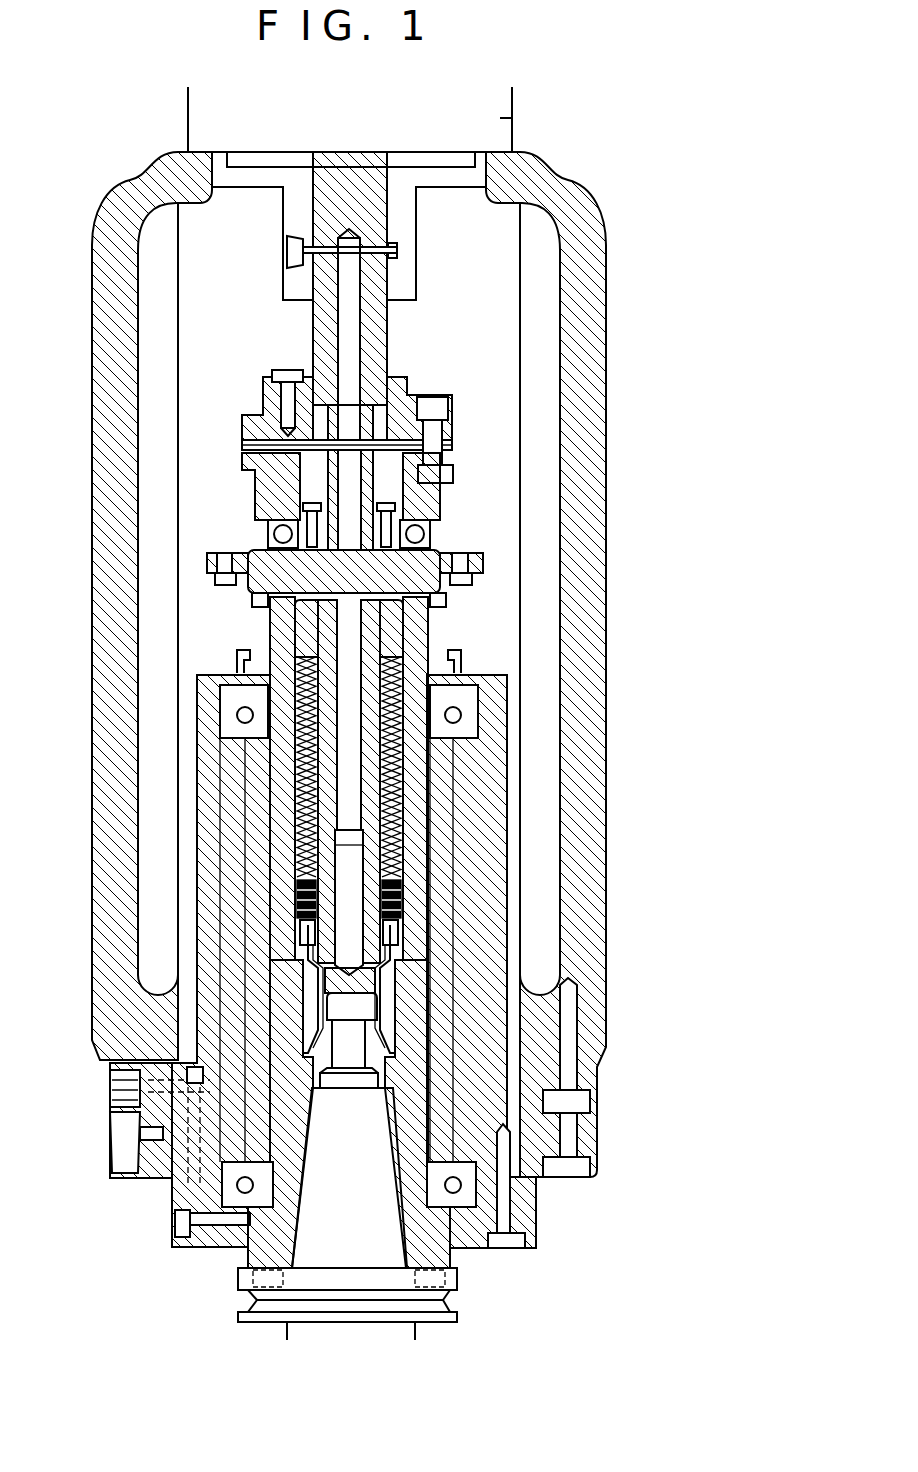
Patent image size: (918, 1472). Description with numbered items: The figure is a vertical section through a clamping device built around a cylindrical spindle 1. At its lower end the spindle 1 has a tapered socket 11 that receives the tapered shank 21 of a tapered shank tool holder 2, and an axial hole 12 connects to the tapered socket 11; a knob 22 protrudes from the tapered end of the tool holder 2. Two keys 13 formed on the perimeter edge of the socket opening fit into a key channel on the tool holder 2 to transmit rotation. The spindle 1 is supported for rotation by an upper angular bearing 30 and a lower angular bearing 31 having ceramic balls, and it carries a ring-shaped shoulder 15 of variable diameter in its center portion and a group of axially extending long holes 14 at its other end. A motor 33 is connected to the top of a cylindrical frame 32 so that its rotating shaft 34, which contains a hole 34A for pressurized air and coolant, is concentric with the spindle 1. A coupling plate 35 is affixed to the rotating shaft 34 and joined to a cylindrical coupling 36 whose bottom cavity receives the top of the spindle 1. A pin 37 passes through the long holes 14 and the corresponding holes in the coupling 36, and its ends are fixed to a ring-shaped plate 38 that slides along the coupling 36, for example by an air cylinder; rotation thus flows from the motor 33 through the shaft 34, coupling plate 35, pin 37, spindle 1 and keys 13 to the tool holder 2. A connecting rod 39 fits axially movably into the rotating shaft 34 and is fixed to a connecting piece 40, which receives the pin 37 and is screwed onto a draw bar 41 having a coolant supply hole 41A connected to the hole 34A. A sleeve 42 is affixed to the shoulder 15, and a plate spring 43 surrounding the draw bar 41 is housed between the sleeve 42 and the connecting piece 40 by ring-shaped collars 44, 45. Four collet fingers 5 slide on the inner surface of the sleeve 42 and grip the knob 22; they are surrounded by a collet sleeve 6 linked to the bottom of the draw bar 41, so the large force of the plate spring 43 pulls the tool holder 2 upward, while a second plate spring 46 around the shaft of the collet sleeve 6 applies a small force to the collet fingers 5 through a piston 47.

The spindle 1 is at (428, 938).
The tapered shank tool holder 2 is at (347, 1167).
The collet fingers 5 is at (305, 1008).
The collet sleeve 6 is at (300, 1043).
The tapered socket 11 is at (400, 1222).
The axial hole 12 is at (390, 1072).
The keys 13 is at (445, 1292).
The long holes 14 is at (256, 547).
The ring-shaped shoulder 15 is at (528, 1010).
The tapered shank 21 is at (349, 1178).
The knob 22 is at (352, 1022).
The upper angular bearing 30 is at (467, 723).
The lower angular bearing 31 is at (535, 1178).
The cylindrical frame 32 is at (583, 257).
The motor 33 is at (490, 123).
The rotating shaft 34 is at (358, 222).
The hole 34A is at (350, 290).
The coupling plate 35 is at (258, 422).
The cylindrical coupling 36 is at (268, 497).
The pin 37 is at (430, 567).
The ring-shaped plate 38 is at (208, 548).
The connecting rod 39 is at (368, 475).
The connecting piece 40 is at (277, 623).
The draw bar 41 is at (370, 680).
The coolant supply hole 41A is at (347, 633).
The sleeve 42 is at (302, 950).
The plate spring 43 is at (293, 758).
The ring-shaped collar 44 is at (277, 657).
The ring-shaped collar 45 is at (300, 880).
The plate spring 46 is at (308, 905).
The piston 47 is at (305, 940).